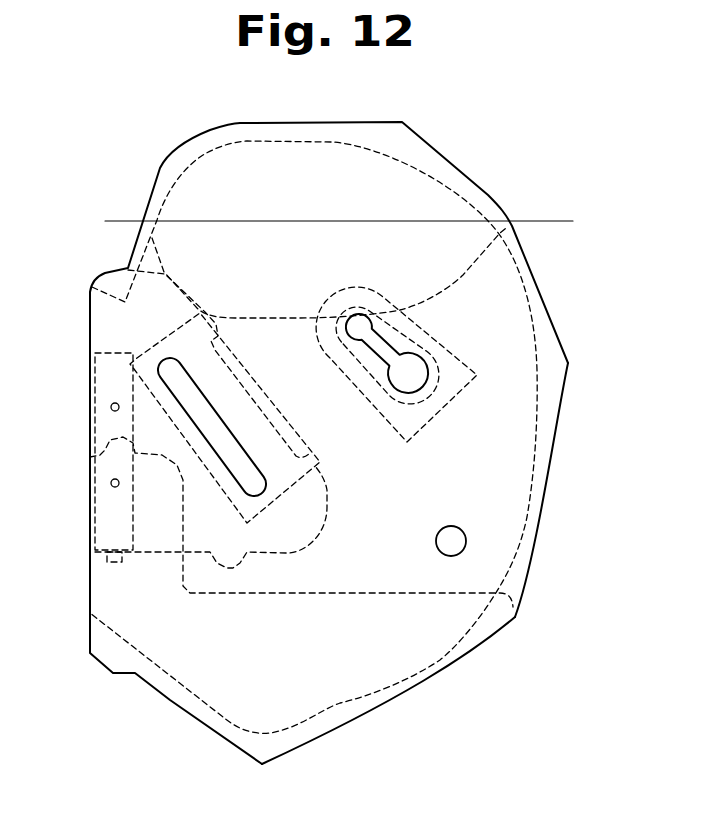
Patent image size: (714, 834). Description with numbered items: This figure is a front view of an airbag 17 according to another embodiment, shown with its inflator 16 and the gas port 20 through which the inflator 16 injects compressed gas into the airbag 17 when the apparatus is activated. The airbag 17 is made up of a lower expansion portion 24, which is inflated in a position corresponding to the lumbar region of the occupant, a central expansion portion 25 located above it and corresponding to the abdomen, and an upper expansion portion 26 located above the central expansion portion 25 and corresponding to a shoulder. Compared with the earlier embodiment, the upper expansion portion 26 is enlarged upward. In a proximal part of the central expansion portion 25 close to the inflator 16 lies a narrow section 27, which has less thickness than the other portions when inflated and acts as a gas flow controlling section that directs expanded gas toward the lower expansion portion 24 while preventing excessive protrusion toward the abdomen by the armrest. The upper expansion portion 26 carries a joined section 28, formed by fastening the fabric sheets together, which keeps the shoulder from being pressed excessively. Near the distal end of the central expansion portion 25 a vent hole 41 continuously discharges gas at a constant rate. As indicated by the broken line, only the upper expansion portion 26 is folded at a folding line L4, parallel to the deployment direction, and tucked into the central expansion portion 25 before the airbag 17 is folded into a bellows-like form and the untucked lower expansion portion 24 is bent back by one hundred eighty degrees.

The inflator 16 is at (120, 353).
The airbag 17 is at (501, 174).
The gas port 20 is at (113, 567).
The lower expansion portion 24 is at (385, 667).
The central expansion portion 25 is at (523, 440).
The upper expansion portion 26 is at (298, 165).
The narrow section 27 is at (208, 400).
The joined section 28 is at (362, 326).
The vent hole 41 is at (466, 541).
The folding line L4 is at (553, 221).